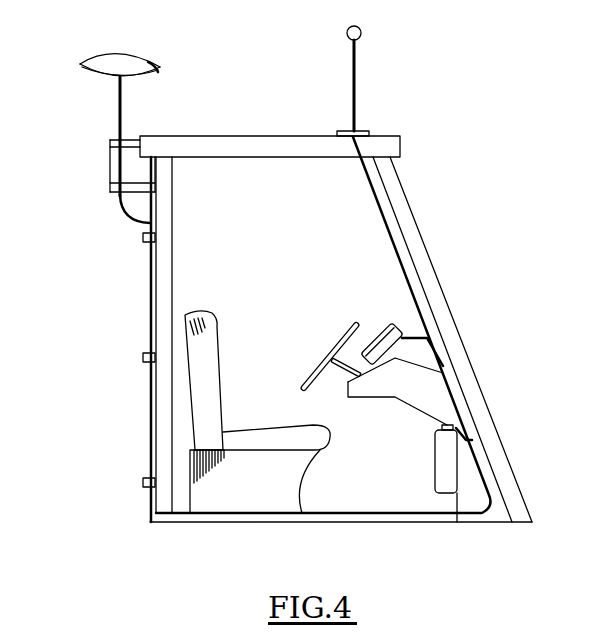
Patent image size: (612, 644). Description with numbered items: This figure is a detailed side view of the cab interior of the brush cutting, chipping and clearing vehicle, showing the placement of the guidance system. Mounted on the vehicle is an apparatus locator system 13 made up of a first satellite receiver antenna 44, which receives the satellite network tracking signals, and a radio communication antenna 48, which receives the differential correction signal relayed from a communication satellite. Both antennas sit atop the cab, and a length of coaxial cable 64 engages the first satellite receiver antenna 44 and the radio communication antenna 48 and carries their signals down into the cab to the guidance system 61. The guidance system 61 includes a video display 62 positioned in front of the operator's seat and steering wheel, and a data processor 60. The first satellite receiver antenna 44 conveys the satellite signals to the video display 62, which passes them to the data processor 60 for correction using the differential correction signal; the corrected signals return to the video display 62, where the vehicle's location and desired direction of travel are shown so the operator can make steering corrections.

The apparatus locator system 13 is at (172, 77).
The first satellite receiver antenna 44 is at (128, 55).
The radio communication antenna 48 is at (357, 82).
The coaxial cable 64 is at (150, 315).
The video display 62 is at (390, 331).
The guidance system 61 is at (430, 398).
The data processor 60 is at (447, 460).